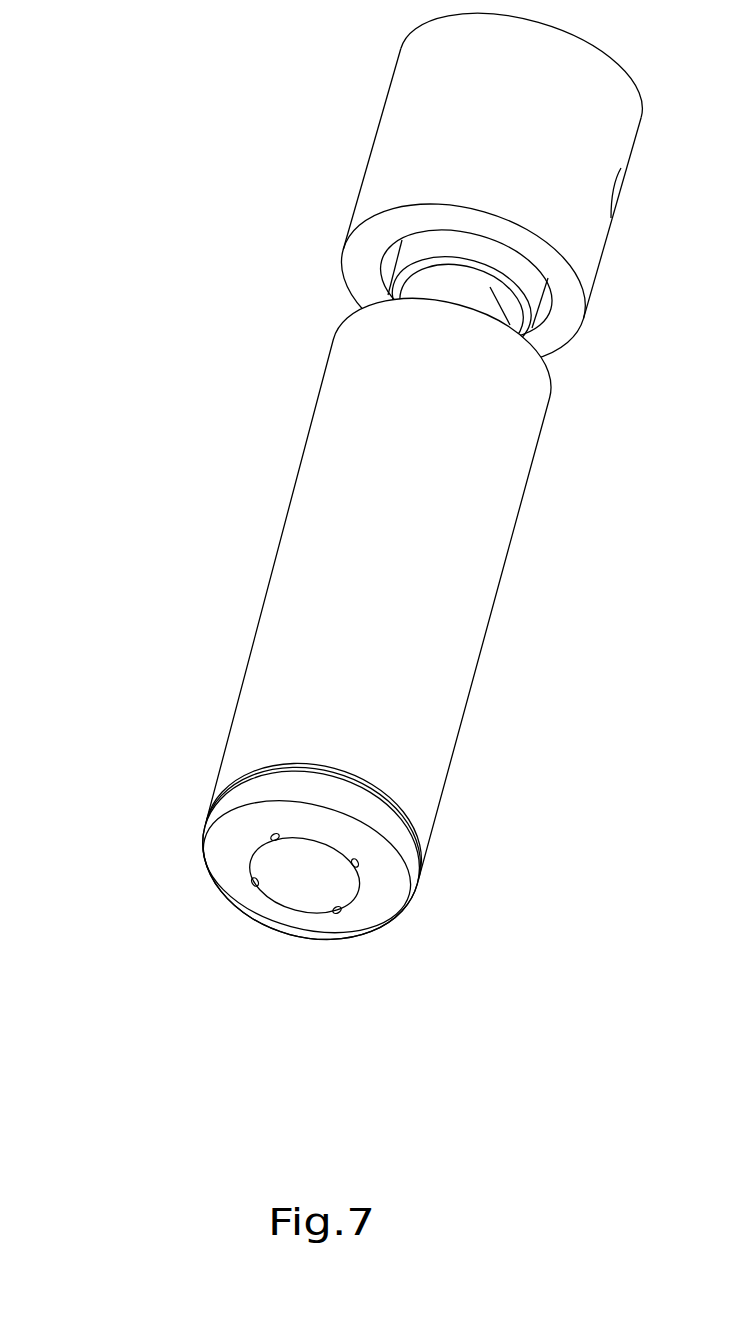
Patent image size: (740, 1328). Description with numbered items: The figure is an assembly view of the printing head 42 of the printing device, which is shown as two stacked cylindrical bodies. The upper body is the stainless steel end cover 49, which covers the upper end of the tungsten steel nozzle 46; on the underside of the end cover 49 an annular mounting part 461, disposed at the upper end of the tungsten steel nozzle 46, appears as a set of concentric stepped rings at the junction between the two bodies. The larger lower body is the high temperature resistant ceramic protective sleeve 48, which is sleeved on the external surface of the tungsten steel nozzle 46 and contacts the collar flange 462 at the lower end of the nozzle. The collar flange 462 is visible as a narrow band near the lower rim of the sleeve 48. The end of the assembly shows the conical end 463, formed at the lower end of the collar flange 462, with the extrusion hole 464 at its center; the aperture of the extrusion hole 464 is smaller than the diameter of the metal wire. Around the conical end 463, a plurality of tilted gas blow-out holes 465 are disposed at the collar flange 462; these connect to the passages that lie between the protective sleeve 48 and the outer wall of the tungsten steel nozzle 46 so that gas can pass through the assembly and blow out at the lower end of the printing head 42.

The printing head 42 is at (158, 337).
The tungsten steel nozzle 46 is at (387, 927).
The high temperature resistant ceramic protective sleeve 48 is at (323, 487).
The stainless steel end cover 49 is at (438, 112).
The annular mounting part 461 is at (417, 287).
The collar flange 462 is at (227, 810).
The conical end 463 is at (288, 877).
The extrusion hole 464 is at (250, 882).
The tilted gas blow-out holes 465 is at (253, 883).